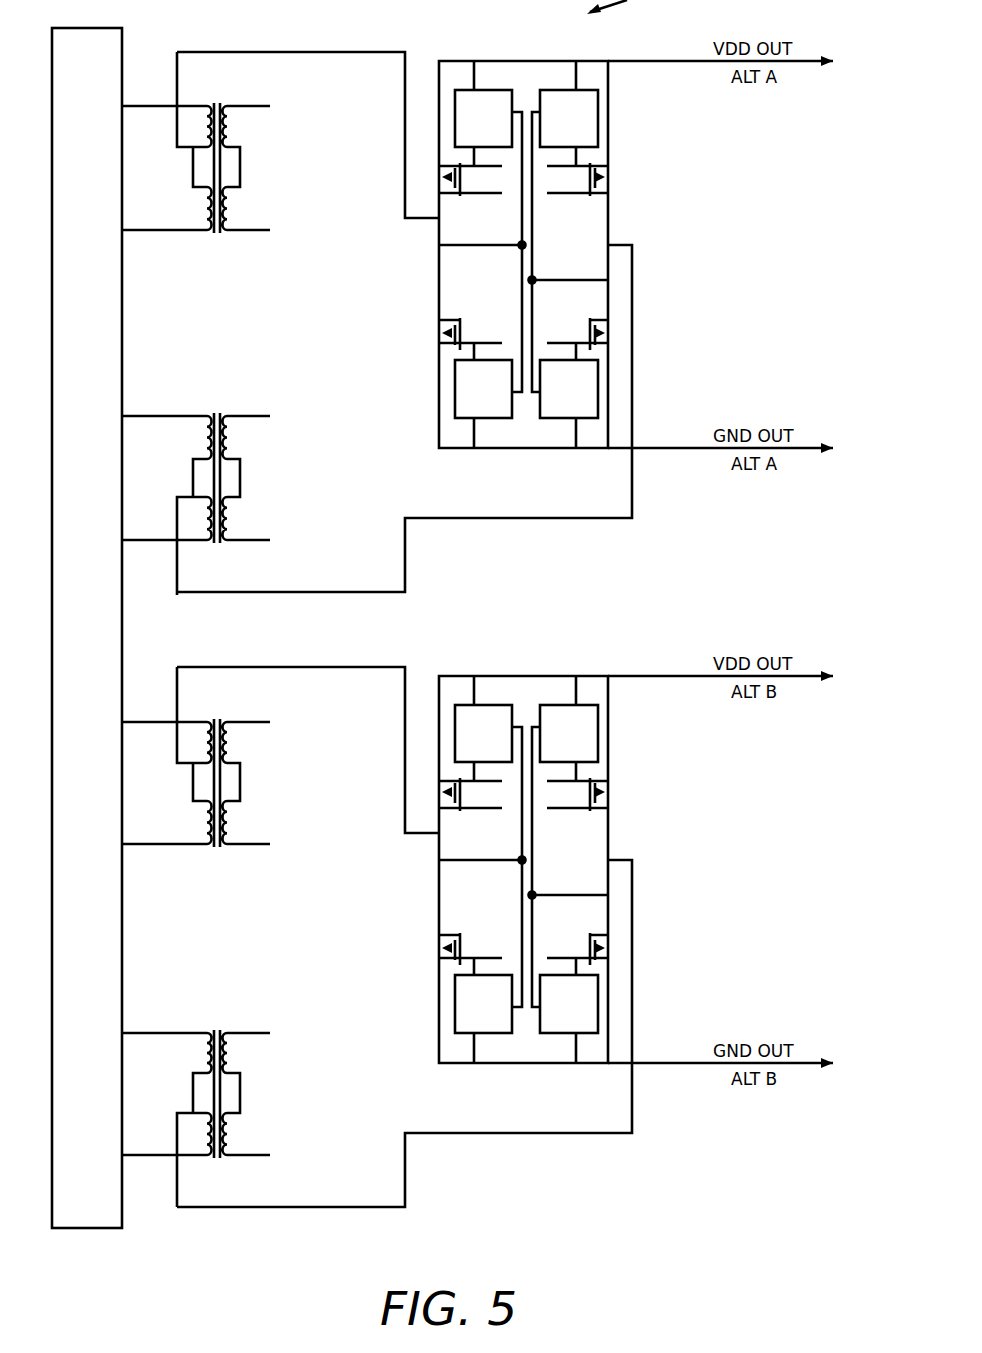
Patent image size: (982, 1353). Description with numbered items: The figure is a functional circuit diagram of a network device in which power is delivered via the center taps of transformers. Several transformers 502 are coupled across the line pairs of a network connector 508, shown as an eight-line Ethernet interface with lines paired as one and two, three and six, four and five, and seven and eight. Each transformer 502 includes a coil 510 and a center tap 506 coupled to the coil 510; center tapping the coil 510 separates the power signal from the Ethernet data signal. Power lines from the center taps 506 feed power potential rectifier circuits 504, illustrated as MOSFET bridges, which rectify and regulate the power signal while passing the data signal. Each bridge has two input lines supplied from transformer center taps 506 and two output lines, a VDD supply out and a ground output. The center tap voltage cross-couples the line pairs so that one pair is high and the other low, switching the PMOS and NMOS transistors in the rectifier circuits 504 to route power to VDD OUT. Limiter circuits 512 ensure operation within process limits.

The transformer 502 is at (240, 231).
The power potential rectifier circuit 504 is at (609, 213).
The center tap 506 is at (192, 153).
The network connector 508 is at (123, 1211).
The coil 510 is at (205, 205).
The limiter circuit 512 is at (547, 73).